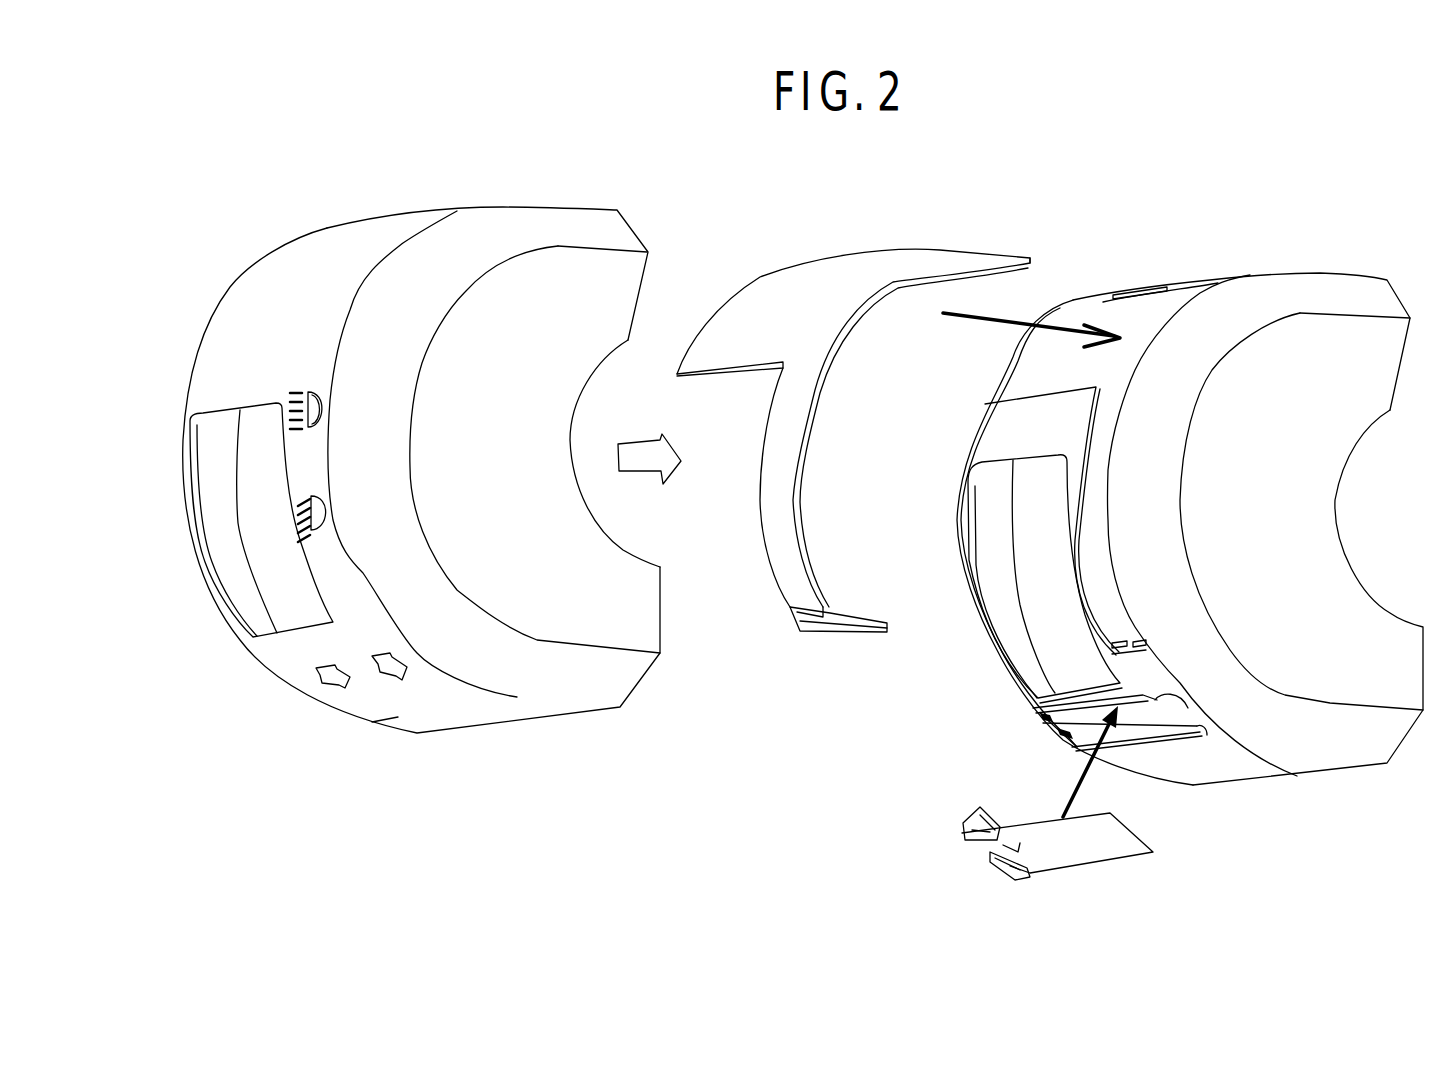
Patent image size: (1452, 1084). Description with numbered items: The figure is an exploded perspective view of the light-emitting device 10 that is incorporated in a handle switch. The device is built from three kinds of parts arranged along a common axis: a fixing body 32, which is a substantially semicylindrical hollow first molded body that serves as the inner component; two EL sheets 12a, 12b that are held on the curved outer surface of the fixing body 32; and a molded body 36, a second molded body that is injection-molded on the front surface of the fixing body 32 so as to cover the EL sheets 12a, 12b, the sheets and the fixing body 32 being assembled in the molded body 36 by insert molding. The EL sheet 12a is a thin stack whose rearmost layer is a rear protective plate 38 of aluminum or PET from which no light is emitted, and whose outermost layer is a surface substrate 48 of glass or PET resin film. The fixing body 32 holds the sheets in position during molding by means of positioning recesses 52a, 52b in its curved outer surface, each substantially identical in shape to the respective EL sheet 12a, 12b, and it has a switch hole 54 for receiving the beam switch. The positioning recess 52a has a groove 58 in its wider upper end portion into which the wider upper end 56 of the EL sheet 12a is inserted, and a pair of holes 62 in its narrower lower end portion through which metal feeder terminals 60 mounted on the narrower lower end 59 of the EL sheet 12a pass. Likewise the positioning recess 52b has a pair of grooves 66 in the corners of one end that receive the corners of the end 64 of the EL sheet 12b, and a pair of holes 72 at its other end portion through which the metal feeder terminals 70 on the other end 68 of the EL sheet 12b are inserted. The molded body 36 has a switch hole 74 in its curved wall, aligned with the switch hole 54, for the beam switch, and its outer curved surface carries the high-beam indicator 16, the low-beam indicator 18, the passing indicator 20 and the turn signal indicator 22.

The light-emitting device 10 is at (1257, 134).
The EL sheet 12a is at (824, 263).
The EL sheet 12b is at (1064, 890).
The high-beam indicator 16 is at (327, 410).
The low-beam indicator 18 is at (331, 511).
The passing indicator 20 is at (308, 259).
The turn signal indicator 22 is at (382, 673).
The fixing body 32 is at (1290, 275).
The molded body 36 is at (483, 198).
The rear protective plate 38 is at (828, 355).
The surface substrate 48 is at (740, 313).
The positioning recess 52a is at (1027, 377).
The positioning recess 52b is at (1153, 718).
The switch hole 54 is at (1020, 548).
The wider upper end 56 is at (1034, 258).
The groove 58 is at (1157, 293).
The narrower lower end 59 is at (790, 616).
The feeder terminals 60 is at (817, 634).
The holes 62 is at (1140, 640).
The end 64 is at (1133, 828).
The grooves 66 is at (1187, 698).
The other end 68 is at (1020, 843).
The feeder terminals 70 is at (985, 852).
The holes 72 is at (1040, 720).
The switch hole 74 is at (263, 557).